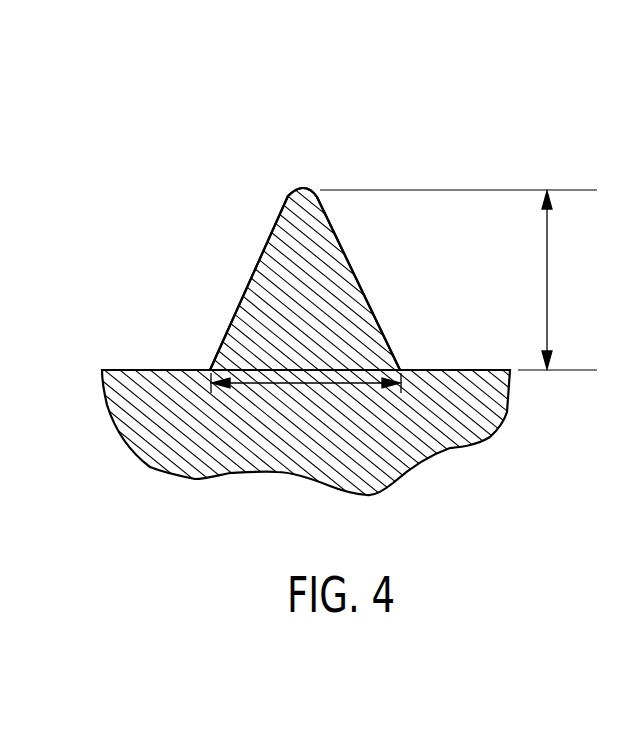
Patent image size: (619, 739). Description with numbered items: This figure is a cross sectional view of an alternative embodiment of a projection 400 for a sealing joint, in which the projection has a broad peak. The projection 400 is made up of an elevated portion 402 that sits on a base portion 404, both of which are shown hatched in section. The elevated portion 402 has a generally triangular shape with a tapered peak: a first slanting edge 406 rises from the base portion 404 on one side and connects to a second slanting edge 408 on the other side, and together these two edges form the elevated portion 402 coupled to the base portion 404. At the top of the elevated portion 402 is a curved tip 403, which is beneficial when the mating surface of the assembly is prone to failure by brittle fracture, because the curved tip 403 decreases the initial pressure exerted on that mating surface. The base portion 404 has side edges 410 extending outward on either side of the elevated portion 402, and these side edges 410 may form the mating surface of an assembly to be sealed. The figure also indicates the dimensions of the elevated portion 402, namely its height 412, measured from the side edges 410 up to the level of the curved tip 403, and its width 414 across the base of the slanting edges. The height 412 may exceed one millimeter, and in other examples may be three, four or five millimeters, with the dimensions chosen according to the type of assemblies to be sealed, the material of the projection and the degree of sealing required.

The projection 400 is at (495, 142).
The elevated portion 402 is at (310, 230).
The curved tip 403 is at (300, 189).
The base portion 404 is at (393, 457).
The first slanting edge 406 is at (262, 258).
The second slanting edge 408 is at (365, 297).
The side edges 410 is at (463, 368).
The height 412 is at (548, 288).
The width 414 is at (297, 383).